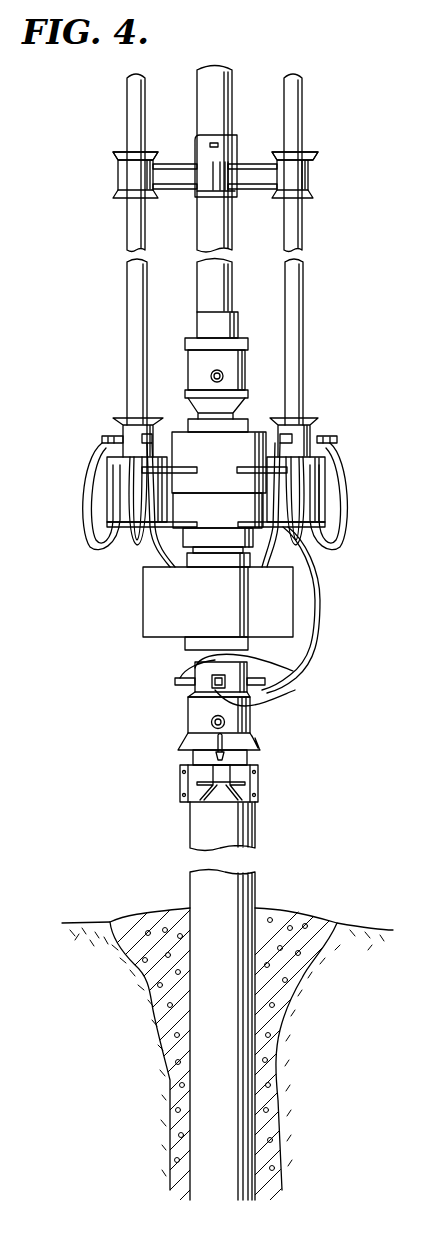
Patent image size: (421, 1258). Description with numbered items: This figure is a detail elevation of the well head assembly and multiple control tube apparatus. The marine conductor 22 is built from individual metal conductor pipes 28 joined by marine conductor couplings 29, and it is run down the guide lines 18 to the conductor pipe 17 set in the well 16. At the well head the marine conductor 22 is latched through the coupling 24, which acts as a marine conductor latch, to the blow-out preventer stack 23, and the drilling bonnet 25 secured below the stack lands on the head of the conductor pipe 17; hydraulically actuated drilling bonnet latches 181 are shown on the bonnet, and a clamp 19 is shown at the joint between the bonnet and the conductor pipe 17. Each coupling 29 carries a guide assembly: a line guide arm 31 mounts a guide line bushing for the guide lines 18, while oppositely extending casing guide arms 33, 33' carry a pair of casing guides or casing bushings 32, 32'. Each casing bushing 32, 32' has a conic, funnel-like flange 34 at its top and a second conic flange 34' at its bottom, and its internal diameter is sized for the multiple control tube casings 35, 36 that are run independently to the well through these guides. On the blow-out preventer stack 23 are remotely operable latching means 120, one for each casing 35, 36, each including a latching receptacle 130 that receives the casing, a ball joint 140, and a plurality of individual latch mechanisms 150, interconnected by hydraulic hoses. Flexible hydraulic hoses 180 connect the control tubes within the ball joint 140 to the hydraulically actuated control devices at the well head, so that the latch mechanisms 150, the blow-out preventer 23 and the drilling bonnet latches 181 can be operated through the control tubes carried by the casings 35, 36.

The marine conductor 22 is at (243, 80).
The marine conductor coupling 29 is at (233, 140).
The line guide arm 31 is at (215, 168).
The conic flange 34 is at (220, 142).
The casing guide 32 is at (120, 171).
The conic flange 34' is at (221, 208).
The casing guide arm 33 is at (175, 197).
The casing guide arm 33' is at (254, 199).
The casing guide 32' is at (313, 171).
The multiple control tube casing 35 is at (132, 298).
The conductor pipe 28 is at (220, 291).
The multiple control tube casing 36 is at (296, 310).
The coupling 24 is at (233, 372).
The latching receptacle 130 is at (130, 432).
The latch mechanism 150 is at (148, 436).
The latching means 120 is at (78, 477).
The ball joint 140 is at (118, 512).
The flexible hydraulic hose 180 is at (330, 562).
The blow-out preventer stack 23 is at (140, 600).
The drilling bonnet latch 181 is at (175, 683).
The drilling bonnet 25 is at (242, 718).
The guide line 18 is at (215, 745).
The pipe clamp 19 is at (258, 784).
The conductor pipe 17 is at (232, 895).
The well 16 is at (148, 1042).